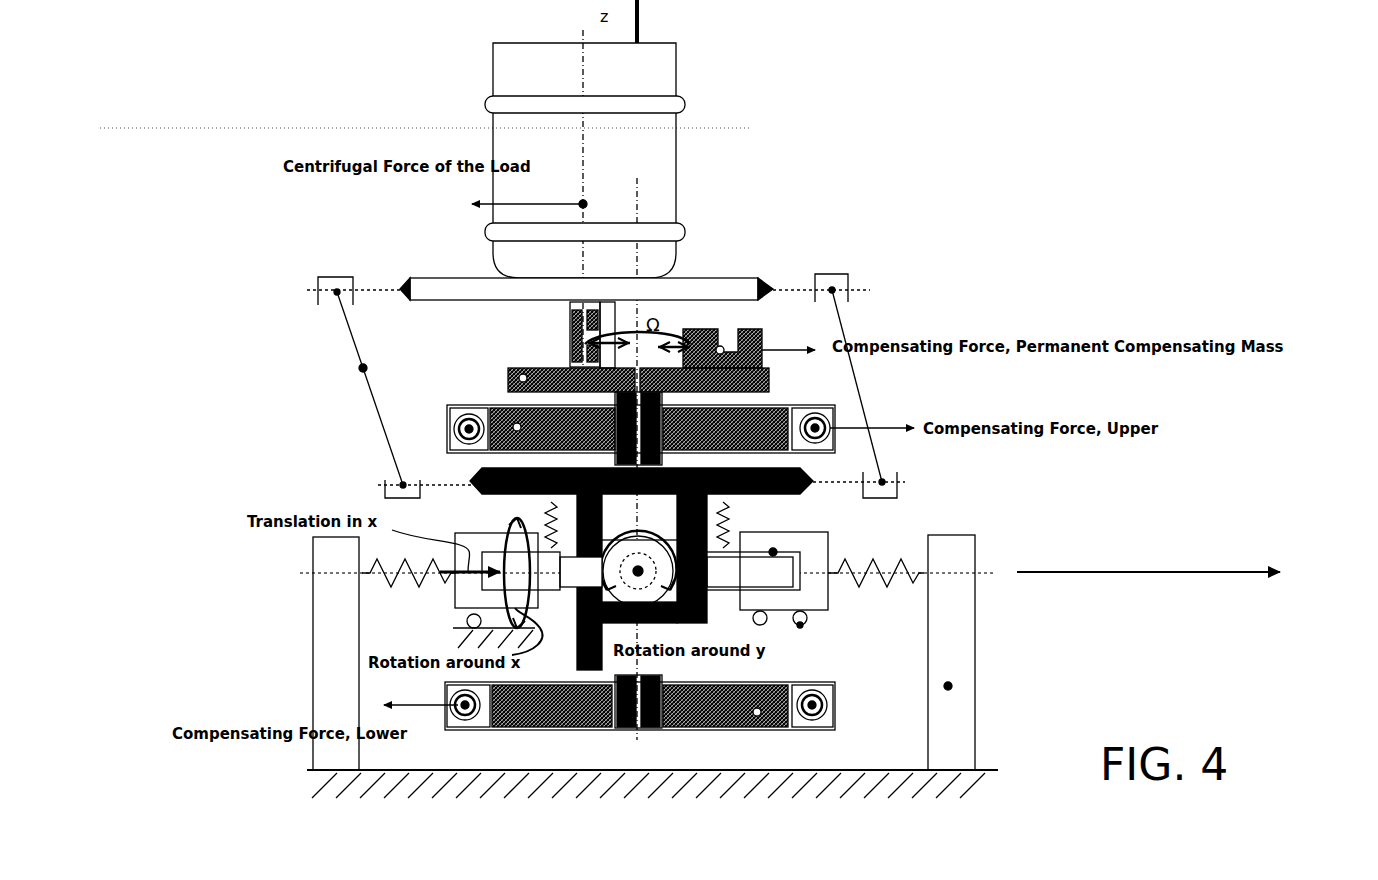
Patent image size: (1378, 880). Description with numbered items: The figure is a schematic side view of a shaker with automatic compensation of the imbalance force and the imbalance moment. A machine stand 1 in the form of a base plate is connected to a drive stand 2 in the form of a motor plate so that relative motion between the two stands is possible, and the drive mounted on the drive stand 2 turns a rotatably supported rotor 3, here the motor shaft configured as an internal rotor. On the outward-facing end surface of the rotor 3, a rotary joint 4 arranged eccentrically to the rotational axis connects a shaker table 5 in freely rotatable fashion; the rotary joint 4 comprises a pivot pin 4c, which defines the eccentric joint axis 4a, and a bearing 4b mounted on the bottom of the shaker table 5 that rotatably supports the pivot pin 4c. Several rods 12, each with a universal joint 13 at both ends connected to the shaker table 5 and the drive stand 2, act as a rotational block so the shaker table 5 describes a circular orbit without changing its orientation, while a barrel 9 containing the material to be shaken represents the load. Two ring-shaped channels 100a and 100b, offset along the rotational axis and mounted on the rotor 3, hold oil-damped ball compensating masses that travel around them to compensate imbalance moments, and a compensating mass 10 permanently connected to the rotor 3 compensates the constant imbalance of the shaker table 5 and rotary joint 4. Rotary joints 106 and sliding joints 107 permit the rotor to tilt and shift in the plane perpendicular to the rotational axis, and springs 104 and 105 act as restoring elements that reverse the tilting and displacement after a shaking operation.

The machine stand 1 is at (948, 686).
The drive stand 2 is at (787, 500).
The rotor 3 is at (523, 378).
The rotary joint 4 is at (557, 322).
The joint axis 4a is at (585, 160).
The bearing 4b is at (562, 307).
The pivot pin 4c is at (577, 362).
The shaker table 5 is at (738, 290).
The barrel 9 is at (583, 204).
The compensating mass 10 is at (720, 349).
The rods 12 is at (363, 368).
The universal joint 13 is at (337, 292).
The ring-shaped channel 100a is at (517, 427).
The ring-shaped channel 100b is at (757, 712).
The spring 104 is at (887, 557).
The spring 105 is at (550, 515).
The rotary joints 106 is at (773, 552).
The sliding joints 107 is at (800, 625).